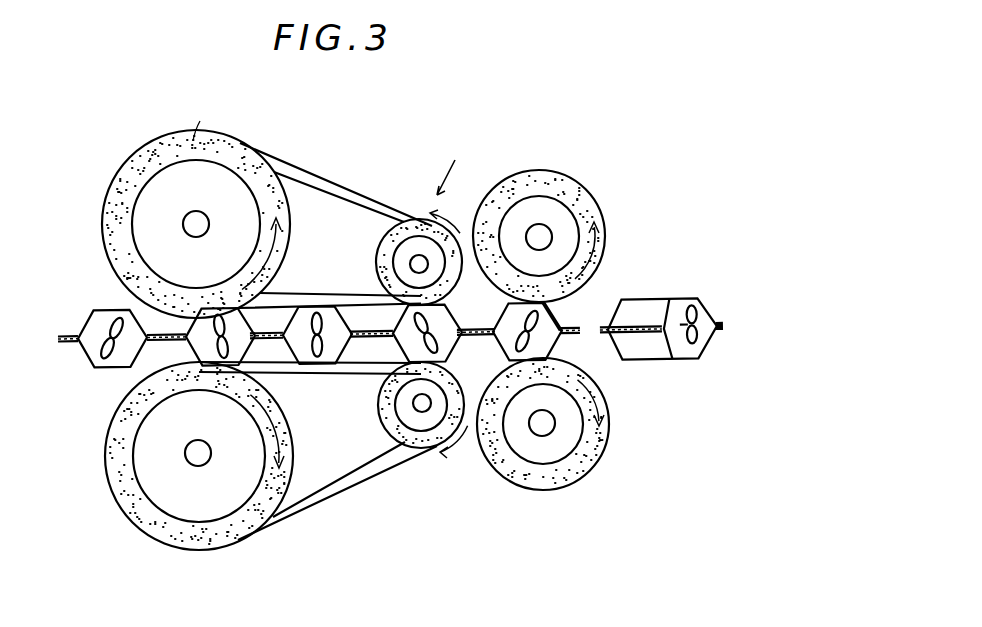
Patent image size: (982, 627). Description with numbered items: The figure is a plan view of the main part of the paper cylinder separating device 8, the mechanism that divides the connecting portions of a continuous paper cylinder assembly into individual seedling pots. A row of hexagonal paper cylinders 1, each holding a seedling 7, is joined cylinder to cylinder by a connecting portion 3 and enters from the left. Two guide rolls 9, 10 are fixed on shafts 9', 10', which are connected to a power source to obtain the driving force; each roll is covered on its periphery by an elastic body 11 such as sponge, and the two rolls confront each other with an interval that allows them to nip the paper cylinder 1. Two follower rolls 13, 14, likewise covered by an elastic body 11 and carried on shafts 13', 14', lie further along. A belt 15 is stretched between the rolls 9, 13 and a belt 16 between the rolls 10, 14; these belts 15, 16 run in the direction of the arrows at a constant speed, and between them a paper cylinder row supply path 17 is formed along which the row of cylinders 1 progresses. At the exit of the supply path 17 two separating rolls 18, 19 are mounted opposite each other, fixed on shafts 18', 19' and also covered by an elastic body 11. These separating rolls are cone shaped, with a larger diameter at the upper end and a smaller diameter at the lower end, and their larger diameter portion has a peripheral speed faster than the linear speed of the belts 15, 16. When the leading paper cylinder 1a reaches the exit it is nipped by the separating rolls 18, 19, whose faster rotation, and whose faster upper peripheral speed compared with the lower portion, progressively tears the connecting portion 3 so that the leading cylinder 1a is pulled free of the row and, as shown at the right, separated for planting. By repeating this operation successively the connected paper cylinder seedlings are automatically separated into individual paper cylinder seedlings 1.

The paper cylinder 1 is at (92, 370).
The leading paper cylinder 1a is at (558, 330).
The connecting portion 3 is at (458, 334).
The seedlings 7 is at (520, 340).
The paper cylinder separating device 8 is at (470, 157).
The guide roll 9 is at (196, 213).
The shaft 9' is at (210, 212).
The guide roll 10 is at (199, 474).
The shaft 10' is at (184, 470).
The elastic body 11 is at (578, 497).
The follower roll 13 is at (398, 257).
The shaft of follower roll 13' is at (420, 222).
The follower roll 14 is at (409, 411).
The shaft of follower roll 14' is at (418, 445).
The belt 15 is at (375, 208).
The belt 16 is at (318, 490).
The paper cylinder row supply path 17 is at (363, 360).
The separating roll 18 is at (539, 222).
The shaft 18' is at (571, 207).
The separating roll 19 is at (543, 444).
The shaft 19' is at (510, 460).